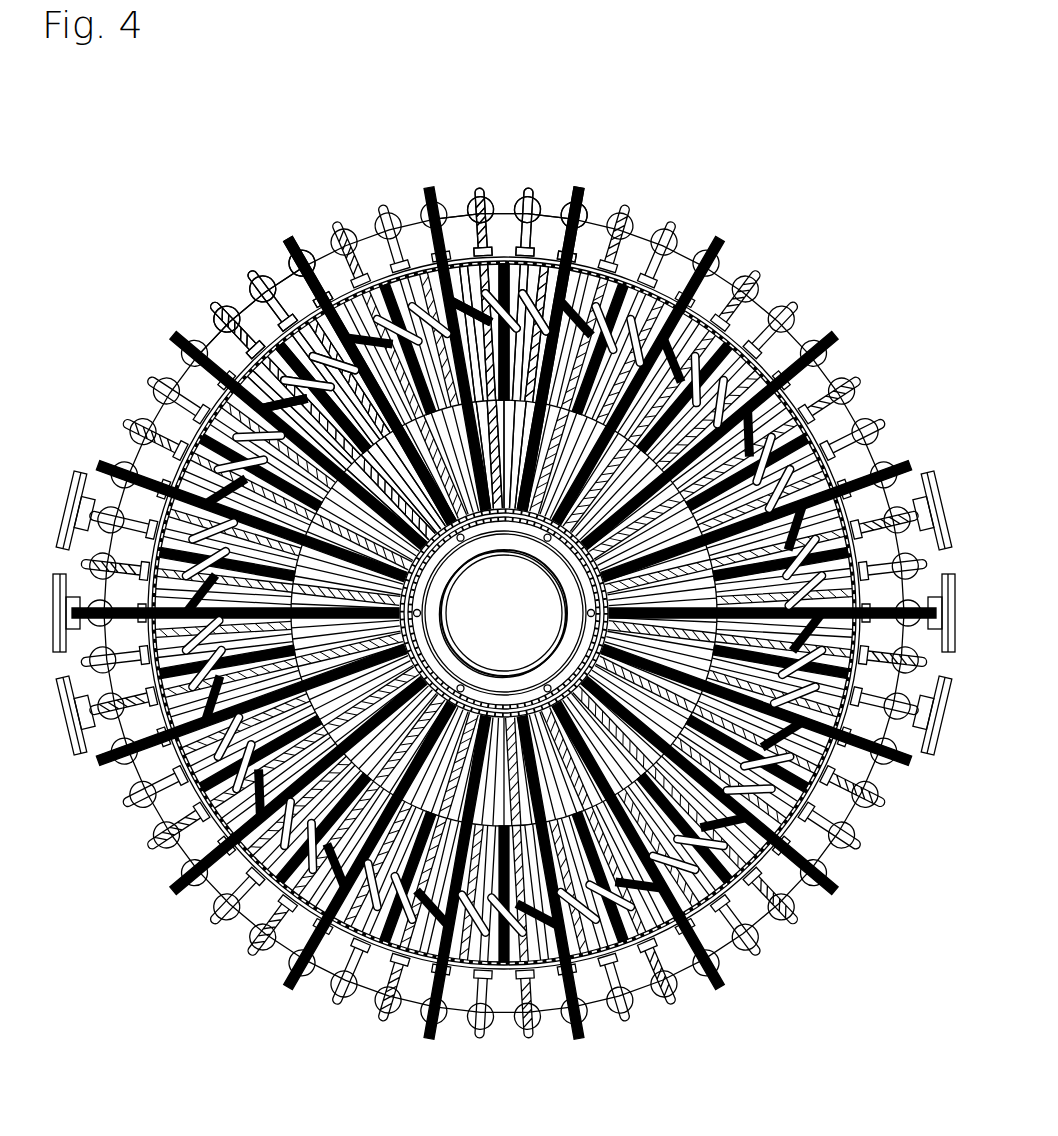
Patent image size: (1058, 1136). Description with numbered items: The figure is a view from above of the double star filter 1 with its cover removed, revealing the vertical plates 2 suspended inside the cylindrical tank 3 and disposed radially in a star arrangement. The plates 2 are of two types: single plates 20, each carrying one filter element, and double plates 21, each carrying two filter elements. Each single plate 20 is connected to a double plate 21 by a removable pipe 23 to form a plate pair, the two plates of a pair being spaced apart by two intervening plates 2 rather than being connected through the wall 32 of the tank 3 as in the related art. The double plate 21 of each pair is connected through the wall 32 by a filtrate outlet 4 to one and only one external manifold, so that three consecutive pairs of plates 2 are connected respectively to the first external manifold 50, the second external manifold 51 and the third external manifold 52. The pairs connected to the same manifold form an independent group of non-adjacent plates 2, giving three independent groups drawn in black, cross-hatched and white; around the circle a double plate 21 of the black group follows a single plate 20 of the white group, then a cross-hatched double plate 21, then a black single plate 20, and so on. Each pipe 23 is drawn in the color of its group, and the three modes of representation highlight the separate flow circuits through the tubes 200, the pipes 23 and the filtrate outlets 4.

The filter 1 is at (777, 199).
The plates 2 is at (578, 292).
The single plates 20 is at (598, 338).
The double plates 21 is at (522, 290).
The pipe 23 is at (215, 320).
The tubes 200 is at (318, 300).
The tank 3 is at (332, 945).
The wall 32 is at (215, 905).
The filtrate outlets 4 is at (292, 302).
The first external manifold 50 is at (906, 487).
The second external manifold 51 is at (930, 597).
The third external manifold 52 is at (906, 765).